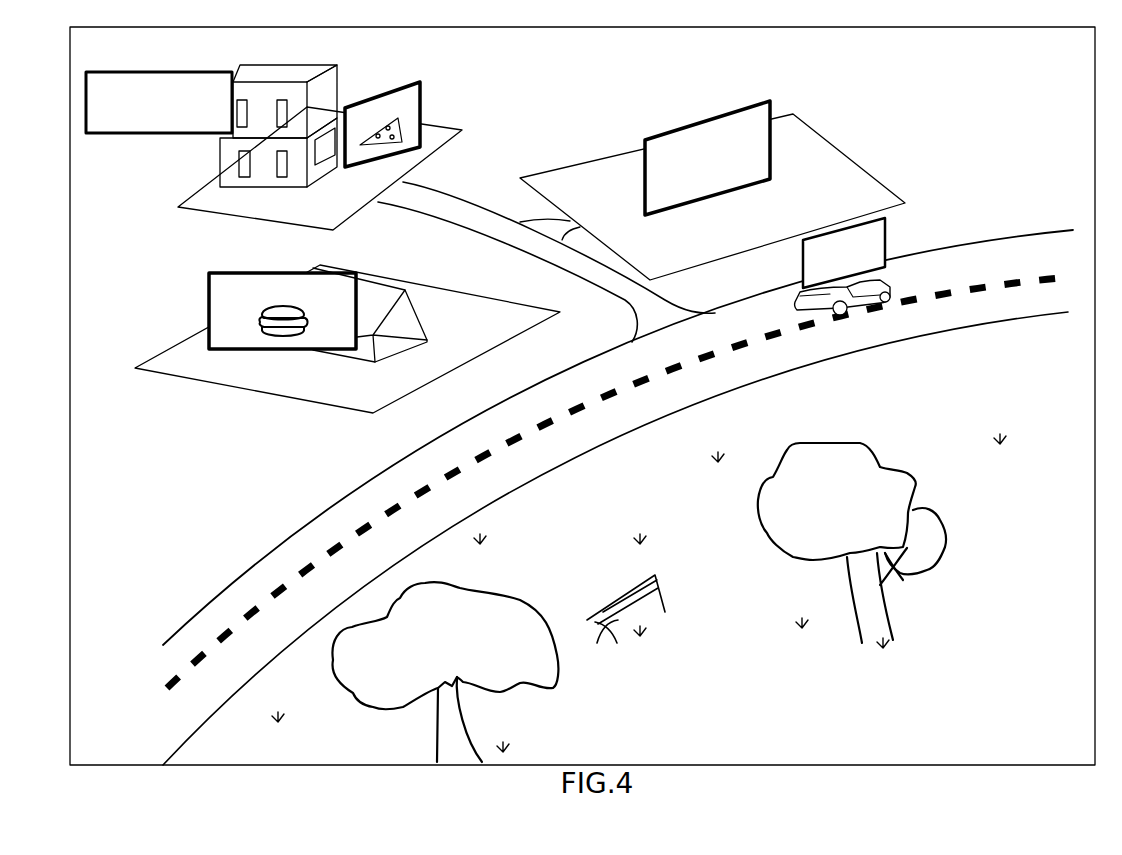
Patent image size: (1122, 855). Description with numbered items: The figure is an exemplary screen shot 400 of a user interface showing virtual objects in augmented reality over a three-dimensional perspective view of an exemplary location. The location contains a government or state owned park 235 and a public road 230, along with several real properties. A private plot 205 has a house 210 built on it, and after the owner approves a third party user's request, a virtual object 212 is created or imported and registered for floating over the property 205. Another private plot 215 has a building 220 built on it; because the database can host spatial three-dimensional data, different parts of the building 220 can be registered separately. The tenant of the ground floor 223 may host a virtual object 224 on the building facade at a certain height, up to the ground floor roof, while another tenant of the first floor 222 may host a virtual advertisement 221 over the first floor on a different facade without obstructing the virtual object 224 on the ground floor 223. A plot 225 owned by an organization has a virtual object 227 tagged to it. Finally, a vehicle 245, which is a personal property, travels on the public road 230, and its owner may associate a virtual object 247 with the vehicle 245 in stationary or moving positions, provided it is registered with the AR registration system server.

The map environment 400 is at (70, 68).
The private property/plot 205 is at (168, 366).
The house 210 is at (403, 322).
The virtual object 212 is at (208, 280).
The private plot 215 is at (186, 207).
The building 220 is at (279, 109).
The virtual advertisement 221 is at (128, 72).
The first floor 222 is at (338, 82).
The ground floor 223 is at (218, 156).
The virtual object 224 is at (420, 93).
The plot 225 is at (608, 160).
The virtual object 227 is at (688, 122).
The public road 230 is at (992, 268).
The park 235 is at (970, 410).
The vehicle 245 is at (893, 285).
The virtual object 247 is at (882, 240).